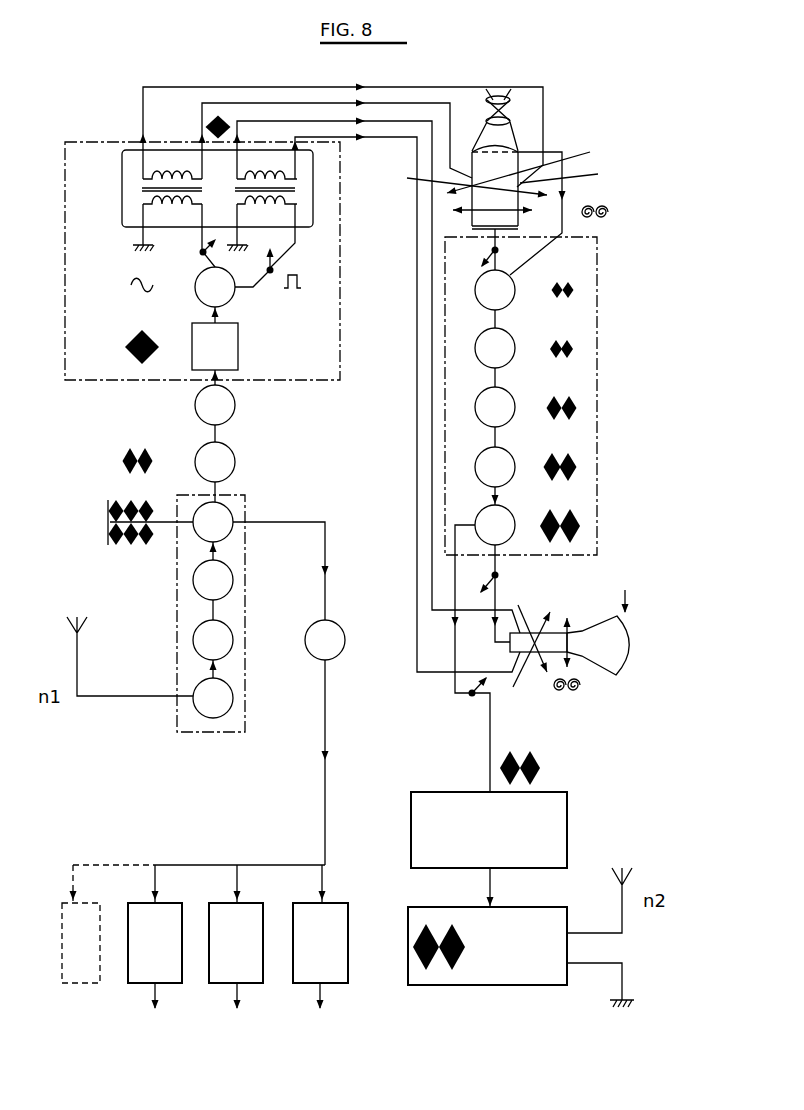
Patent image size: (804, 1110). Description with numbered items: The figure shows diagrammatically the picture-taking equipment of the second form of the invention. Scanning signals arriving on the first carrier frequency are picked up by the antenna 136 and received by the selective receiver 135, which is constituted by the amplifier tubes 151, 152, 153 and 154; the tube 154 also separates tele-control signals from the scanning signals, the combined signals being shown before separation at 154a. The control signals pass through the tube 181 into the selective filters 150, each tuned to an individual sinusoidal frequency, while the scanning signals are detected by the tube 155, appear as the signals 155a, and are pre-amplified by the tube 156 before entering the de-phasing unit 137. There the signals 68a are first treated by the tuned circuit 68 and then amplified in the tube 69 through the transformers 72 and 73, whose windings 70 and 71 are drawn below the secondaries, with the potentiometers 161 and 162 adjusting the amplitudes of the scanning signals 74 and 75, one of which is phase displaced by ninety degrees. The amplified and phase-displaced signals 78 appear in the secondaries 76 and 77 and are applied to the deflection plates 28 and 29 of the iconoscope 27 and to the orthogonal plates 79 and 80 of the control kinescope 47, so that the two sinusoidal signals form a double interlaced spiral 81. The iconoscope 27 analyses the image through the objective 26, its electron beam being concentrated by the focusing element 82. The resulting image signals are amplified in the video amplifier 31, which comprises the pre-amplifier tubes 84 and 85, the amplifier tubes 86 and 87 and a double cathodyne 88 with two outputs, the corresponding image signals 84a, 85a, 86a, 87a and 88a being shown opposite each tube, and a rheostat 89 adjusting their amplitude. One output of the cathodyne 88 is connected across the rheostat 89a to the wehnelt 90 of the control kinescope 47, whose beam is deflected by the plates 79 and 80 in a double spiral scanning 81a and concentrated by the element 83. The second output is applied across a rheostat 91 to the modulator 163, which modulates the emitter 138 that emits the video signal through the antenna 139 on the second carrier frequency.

The objective 26 is at (500, 115).
The iconoscope 27 is at (531, 166).
The deflection plate 28 is at (571, 175).
The deflection plate 29 is at (465, 184).
The video amplifier 31 is at (577, 255).
The control kinescope 47 is at (618, 630).
The tuned circuit 68 is at (217, 348).
The signals 68a is at (135, 362).
The tube 69 is at (205, 292).
The secondary winding 70 is at (143, 203).
The secondary winding 71 is at (299, 203).
The transformer 72 is at (115, 175).
The transformer 73 is at (305, 214).
The scanning sinusoidal signal 74 is at (128, 283).
The scanning sinusoidal signal 75 is at (298, 281).
The secondary 76 is at (155, 175).
The secondary 77 is at (297, 178).
The amplified and phase displaced signals 78 is at (222, 116).
The orthogonal plate 79 is at (522, 661).
The orthogonal plate 80 is at (521, 628).
The double interlaced spiral 81 is at (613, 205).
The double spiral scanning 81a is at (583, 690).
The focusing element 82 is at (487, 210).
The concentrating element 83 is at (570, 650).
The pre-amplifier tube 84 is at (490, 285).
The image signals 84a is at (574, 288).
The pre-amplifier tube 85 is at (489, 348).
The image signals 85a is at (574, 346).
The amplifier tube 86 is at (489, 408).
The image signals 86a is at (577, 406).
The amplifier tube 87 is at (488, 467).
The image signals 87a is at (577, 465).
The double cathodyne 88 is at (489, 517).
The image signals 88a is at (580, 523).
The rheostat 89 is at (492, 250).
The rheostat 89a is at (500, 572).
The wehnelt 90 is at (508, 643).
The rheostat 91 is at (468, 696).
The selective receiver 135 is at (233, 667).
The antenna 136 is at (78, 655).
The de-phasing unit 137 is at (95, 360).
The emitter 138 is at (510, 977).
The antenna 139 is at (600, 950).
The selective filters 150 is at (310, 972).
The amplifier tube 151 is at (193, 707).
The amplifier tube 152 is at (212, 640).
The amplifier tube 153 is at (217, 580).
The amplifier tube 154 is at (217, 523).
The scanning and control signals 154a is at (108, 512).
The detector tube 155 is at (218, 462).
The scanning signals 155a is at (122, 455).
The pre-amplifier tube 156 is at (220, 405).
The potentiometer 161 is at (198, 256).
The potentiometer 162 is at (273, 268).
The modulator 163 is at (550, 835).
The tube 181 is at (332, 632).